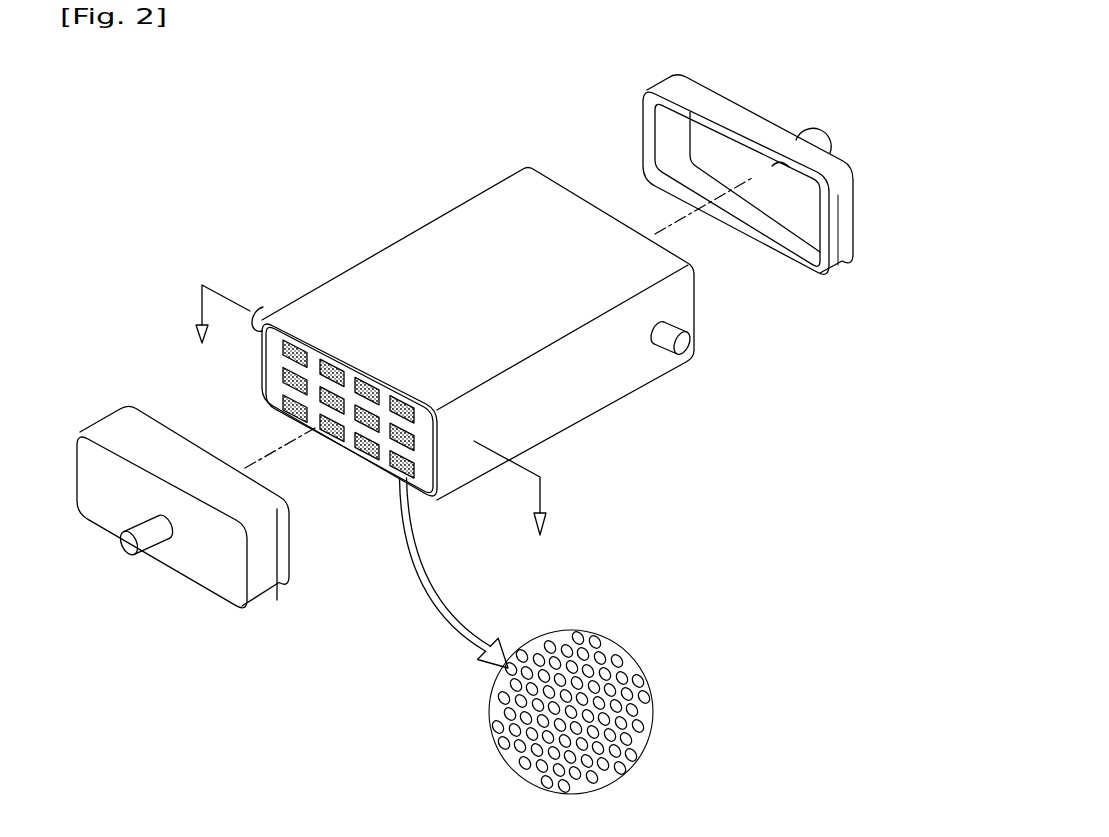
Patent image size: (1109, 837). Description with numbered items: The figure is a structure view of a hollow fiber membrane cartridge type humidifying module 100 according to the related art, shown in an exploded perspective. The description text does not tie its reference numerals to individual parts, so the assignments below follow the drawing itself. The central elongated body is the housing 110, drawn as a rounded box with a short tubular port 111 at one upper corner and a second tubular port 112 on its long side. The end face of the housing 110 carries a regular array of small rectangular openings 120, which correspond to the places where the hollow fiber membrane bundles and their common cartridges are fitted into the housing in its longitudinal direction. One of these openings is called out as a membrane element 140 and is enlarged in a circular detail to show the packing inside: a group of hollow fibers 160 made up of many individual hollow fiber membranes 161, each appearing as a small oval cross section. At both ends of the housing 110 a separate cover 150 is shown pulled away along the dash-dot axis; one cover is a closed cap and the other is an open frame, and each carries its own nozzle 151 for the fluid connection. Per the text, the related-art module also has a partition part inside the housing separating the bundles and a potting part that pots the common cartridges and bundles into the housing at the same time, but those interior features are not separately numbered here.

The air purifier / filter device 100 is at (224, 104).
The housing body 110 is at (405, 237).
The first nozzle 111 is at (268, 306).
The second nozzle 112 is at (689, 356).
The openings 120 is at (286, 405).
The filter 140 is at (475, 567).
The cover cap 150 is at (851, 266).
The cap nozzle 151 is at (148, 530).
The hole group 160 is at (640, 712).
The holes 161 is at (622, 664).